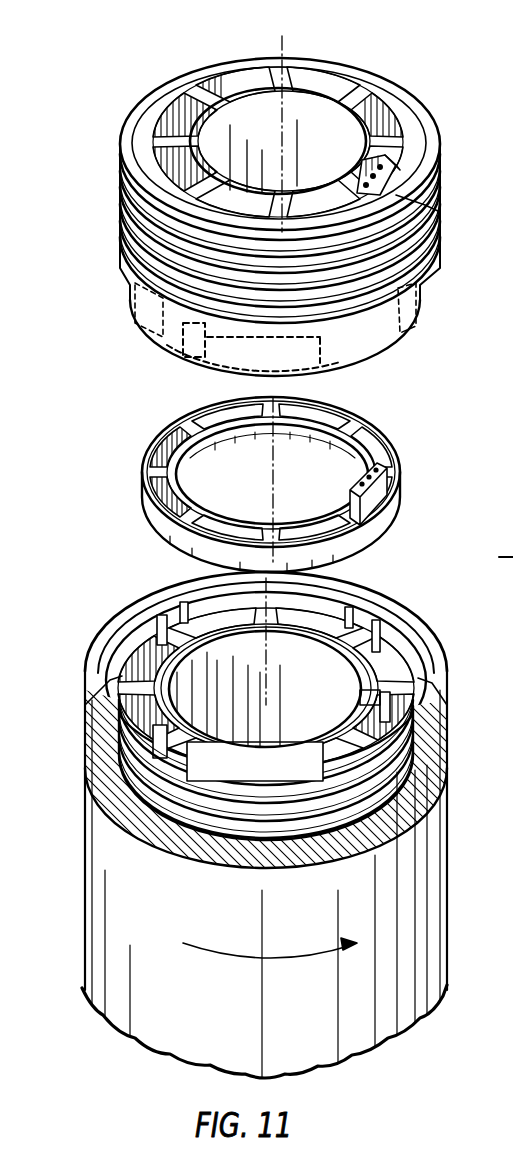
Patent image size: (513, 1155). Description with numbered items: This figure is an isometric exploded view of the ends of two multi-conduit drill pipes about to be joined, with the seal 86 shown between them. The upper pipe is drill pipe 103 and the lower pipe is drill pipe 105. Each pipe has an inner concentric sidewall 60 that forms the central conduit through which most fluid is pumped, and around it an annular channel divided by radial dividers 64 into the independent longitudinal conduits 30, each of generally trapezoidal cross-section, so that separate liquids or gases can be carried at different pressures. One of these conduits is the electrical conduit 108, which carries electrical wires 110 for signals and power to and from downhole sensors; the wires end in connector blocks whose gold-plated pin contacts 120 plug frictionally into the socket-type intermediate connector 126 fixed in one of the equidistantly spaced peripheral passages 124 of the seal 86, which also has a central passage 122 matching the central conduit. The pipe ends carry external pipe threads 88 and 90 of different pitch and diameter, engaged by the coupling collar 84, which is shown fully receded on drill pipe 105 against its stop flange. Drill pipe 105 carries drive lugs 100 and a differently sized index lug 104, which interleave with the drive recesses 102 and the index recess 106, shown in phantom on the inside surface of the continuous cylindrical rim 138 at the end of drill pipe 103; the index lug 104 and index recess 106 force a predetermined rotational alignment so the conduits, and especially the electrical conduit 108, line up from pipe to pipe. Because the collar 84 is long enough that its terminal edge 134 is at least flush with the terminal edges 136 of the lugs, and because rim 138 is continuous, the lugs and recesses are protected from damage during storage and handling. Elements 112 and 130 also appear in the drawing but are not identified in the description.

The longitudinal conduits 30 is at (256, 72).
The inner concentric sidewall 60 is at (314, 115).
The radial dividers 64 is at (197, 96).
The coupling collar 84 is at (120, 1016).
The seal 86 is at (404, 432).
The external pipe threads 88 is at (120, 205).
The external pipe threads 90 is at (110, 772).
The drive lugs 100 is at (200, 590).
The drive recesses 102 is at (138, 297).
The drill pipe 103 is at (397, 68).
The index lug 104 is at (291, 764).
The drill pipe 105 is at (213, 828).
The index recess 106 is at (172, 357).
The electrical conduit 108 is at (387, 180).
The electrical wires 110 is at (394, 162).
The ridge 112 is at (436, 193).
The pin contacts 120 is at (362, 697).
The central passage 122 is at (338, 450).
The peripheral passages 124 is at (318, 413).
The intermediate connector 126 is at (385, 547).
The ring spoke 130 is at (150, 468).
The terminal edge 134 is at (150, 602).
The terminal edges 136 is at (140, 630).
The continuous cylindrical rim 138 is at (398, 344).